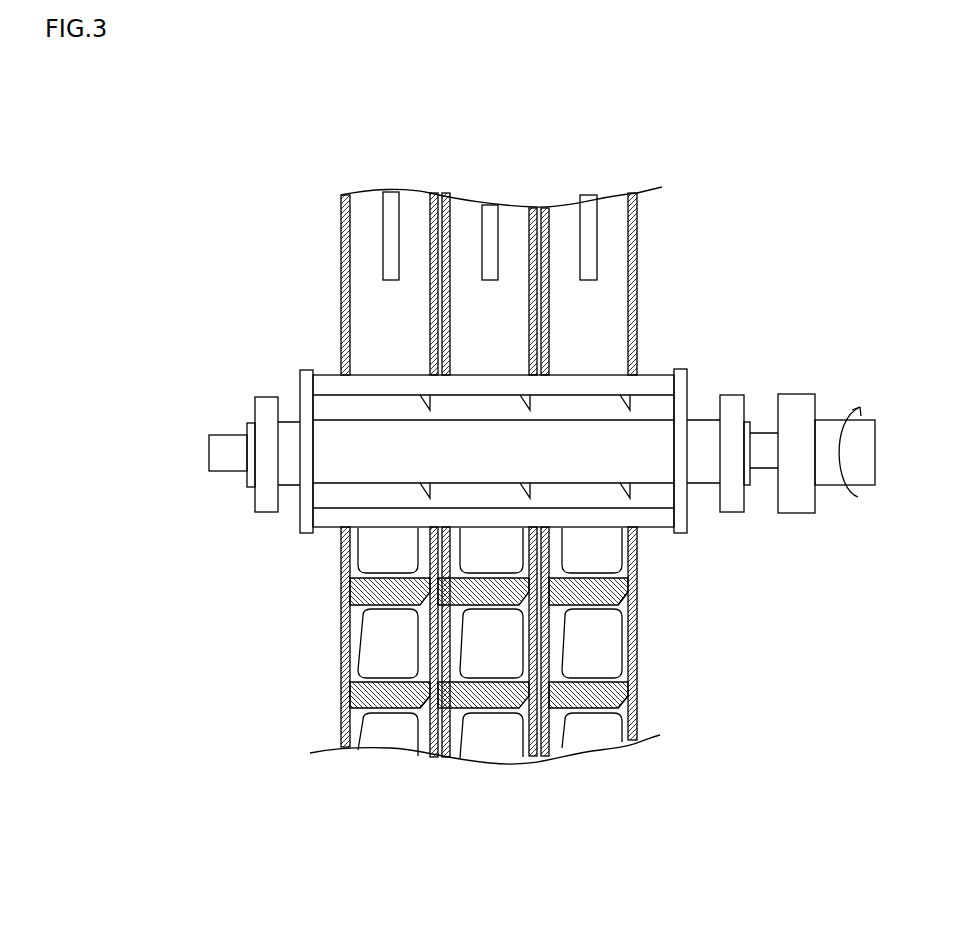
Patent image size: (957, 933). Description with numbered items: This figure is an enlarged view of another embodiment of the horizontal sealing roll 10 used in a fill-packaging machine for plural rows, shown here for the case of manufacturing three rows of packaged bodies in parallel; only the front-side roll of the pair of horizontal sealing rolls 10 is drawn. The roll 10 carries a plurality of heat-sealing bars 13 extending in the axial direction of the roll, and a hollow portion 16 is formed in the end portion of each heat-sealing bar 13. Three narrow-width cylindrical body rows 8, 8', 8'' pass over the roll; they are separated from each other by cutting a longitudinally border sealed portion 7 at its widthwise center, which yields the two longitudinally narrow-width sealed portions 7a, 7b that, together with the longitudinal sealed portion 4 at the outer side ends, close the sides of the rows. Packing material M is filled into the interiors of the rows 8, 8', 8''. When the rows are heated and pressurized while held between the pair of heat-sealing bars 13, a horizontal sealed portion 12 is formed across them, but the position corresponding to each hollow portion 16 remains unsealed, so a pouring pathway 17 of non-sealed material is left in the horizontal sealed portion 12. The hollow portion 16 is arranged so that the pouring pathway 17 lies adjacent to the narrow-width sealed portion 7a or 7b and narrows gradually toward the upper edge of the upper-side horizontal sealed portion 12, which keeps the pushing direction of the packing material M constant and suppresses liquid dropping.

The longitudinal sealed portion 4 is at (343, 315).
The longitudinally border sealed portion 7 is at (556, 476).
The longitudinally narrow-width sealed portion 7a is at (434, 192).
The longitudinally narrow-width sealed portion 7b is at (446, 192).
The narrow-width cylindrical body row 8 is at (337, 241).
The narrow-width cylindrical body row 8' is at (386, 285).
The narrow-width cylindrical body row 8'' is at (659, 237).
The horizontal sealing roll 10 is at (177, 438).
The horizontal sealed portion 12 is at (360, 585).
The heat-sealing bar 13 is at (337, 413).
The hollow portion 16 is at (632, 393).
The pouring pathway 17 is at (430, 697).
The packing material M is at (377, 637).